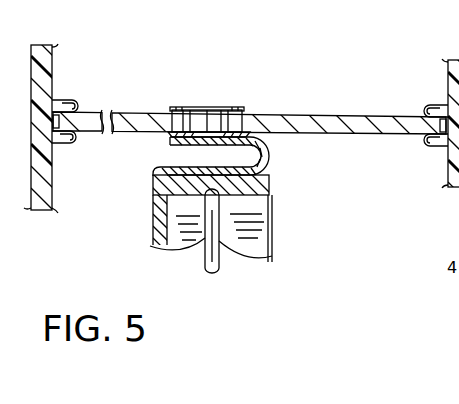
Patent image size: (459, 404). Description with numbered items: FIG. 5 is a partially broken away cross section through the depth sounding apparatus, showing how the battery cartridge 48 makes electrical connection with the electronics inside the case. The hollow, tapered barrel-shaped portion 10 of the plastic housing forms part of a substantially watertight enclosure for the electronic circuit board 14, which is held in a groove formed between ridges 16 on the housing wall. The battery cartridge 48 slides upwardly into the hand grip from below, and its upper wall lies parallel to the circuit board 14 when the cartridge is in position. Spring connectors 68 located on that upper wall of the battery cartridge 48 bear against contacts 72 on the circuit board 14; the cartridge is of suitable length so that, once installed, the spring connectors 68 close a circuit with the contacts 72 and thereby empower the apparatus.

The barrel-shaped portion 10 is at (56, 70).
The electronic circuit board 14 is at (311, 117).
The ridges 16 is at (422, 110).
The battery cartridge 48 is at (147, 232).
The spring connectors 68 is at (270, 152).
The contacts 72 is at (204, 112).